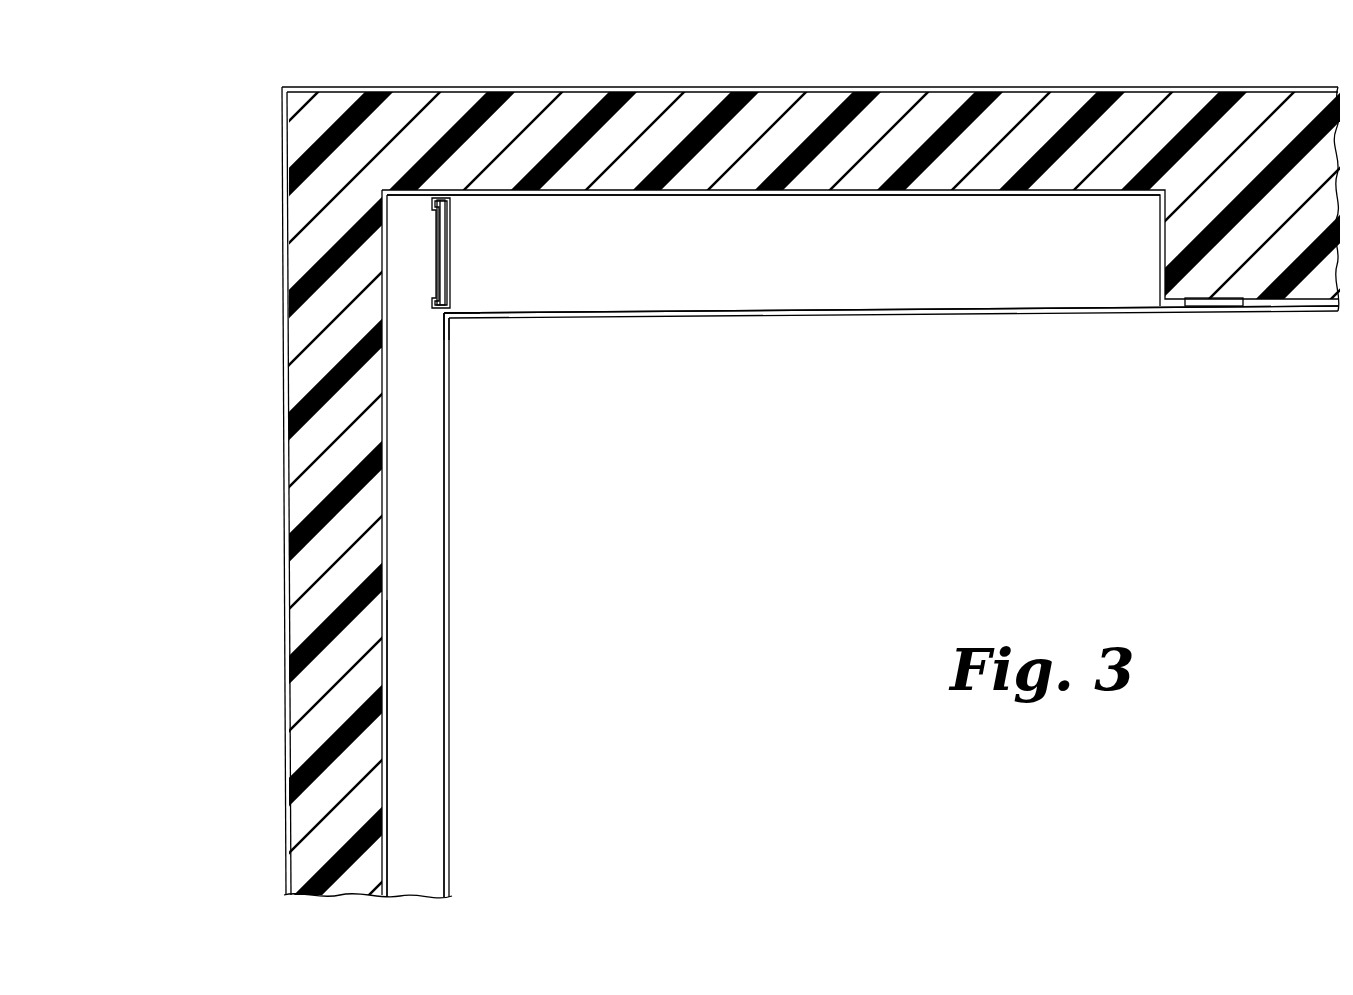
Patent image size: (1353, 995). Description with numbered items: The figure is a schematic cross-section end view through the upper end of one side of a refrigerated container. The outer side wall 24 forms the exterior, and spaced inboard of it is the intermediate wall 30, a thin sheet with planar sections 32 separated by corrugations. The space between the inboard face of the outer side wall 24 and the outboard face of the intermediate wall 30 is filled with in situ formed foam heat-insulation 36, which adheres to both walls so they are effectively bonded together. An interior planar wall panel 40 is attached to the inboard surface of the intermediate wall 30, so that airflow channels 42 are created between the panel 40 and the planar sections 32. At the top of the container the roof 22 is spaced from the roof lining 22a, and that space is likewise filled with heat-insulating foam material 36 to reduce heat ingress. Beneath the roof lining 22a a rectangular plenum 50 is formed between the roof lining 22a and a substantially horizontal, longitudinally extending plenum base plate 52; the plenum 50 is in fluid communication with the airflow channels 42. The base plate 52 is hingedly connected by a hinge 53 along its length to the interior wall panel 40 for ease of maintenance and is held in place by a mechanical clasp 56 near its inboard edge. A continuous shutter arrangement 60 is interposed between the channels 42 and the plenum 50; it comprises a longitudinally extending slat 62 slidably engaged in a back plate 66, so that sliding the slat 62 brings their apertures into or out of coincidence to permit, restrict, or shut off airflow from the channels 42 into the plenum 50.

The roof 22 is at (882, 90).
The roof lining 22a is at (927, 192).
The outer side wall 24 is at (284, 641).
The intermediate wall 30 is at (390, 786).
The planar sections 32 is at (388, 702).
The foam heat-insulation 36 is at (545, 130).
The interior planar wall panel 40 is at (446, 639).
The airflow channels 42 is at (418, 455).
The plenum 50 is at (790, 272).
The plenum base plate 52 is at (726, 312).
The hinge 53 is at (447, 318).
The mechanical clasp 56 is at (1213, 300).
The shutter arrangement 60 is at (505, 272).
The slat 62 is at (443, 262).
The back plate 66 is at (447, 277).